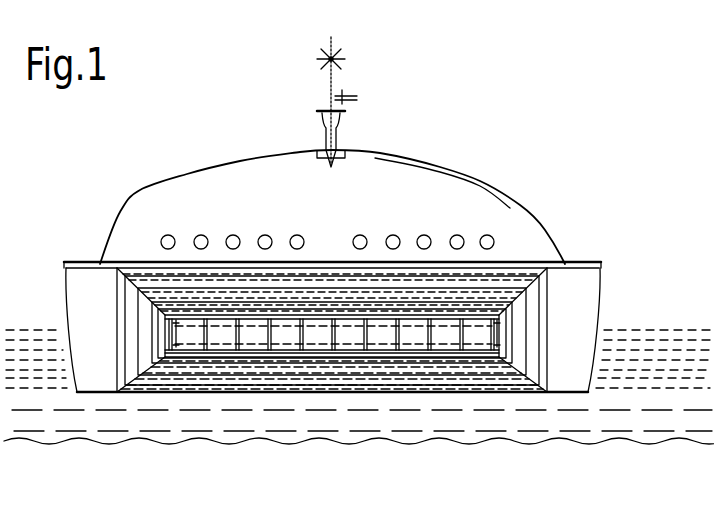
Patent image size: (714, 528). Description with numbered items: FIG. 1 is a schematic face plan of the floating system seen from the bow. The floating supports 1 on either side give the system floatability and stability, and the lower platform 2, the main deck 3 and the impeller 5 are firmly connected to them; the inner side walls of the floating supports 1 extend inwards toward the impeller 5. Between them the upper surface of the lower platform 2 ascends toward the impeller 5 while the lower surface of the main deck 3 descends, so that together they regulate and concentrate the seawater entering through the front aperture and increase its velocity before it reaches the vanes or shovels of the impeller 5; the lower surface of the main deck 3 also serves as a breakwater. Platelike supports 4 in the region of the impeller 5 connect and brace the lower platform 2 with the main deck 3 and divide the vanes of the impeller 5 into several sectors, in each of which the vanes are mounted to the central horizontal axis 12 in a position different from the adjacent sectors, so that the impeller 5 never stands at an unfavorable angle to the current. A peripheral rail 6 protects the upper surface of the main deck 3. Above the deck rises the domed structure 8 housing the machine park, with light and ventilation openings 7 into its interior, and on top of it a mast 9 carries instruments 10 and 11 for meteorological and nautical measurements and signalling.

The floating supports 1 is at (577, 285).
The lower platform 2 is at (375, 378).
The main deck 3 is at (157, 290).
The platelike supports 4 is at (262, 348).
The impeller 5 is at (318, 338).
The peripheral rail 6 is at (74, 262).
The light and ventilation openings 7 is at (165, 234).
The domed structure 8 is at (240, 180).
The mast 9 is at (324, 140).
The instrument 10 is at (324, 57).
The instrument 11 is at (358, 97).
The central horizontal axis 12 is at (176, 357).